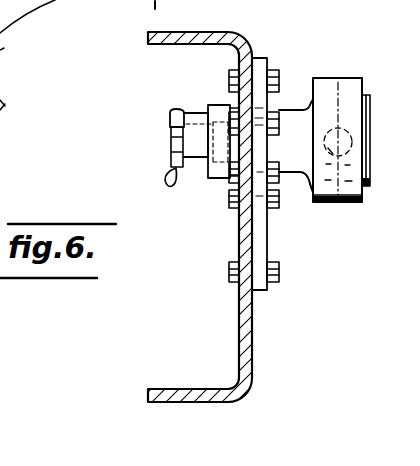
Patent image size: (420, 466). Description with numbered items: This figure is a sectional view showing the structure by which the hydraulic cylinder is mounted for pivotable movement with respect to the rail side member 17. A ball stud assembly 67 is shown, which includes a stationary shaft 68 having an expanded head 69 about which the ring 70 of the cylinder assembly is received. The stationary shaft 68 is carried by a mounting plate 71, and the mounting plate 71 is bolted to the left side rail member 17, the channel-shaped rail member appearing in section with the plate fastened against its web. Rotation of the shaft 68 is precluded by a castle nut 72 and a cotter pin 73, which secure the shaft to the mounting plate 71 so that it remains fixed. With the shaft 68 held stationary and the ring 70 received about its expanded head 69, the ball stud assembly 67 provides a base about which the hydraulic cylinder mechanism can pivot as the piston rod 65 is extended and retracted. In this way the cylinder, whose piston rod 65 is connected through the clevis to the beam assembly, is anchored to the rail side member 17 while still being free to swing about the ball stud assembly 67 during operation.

The left side rail member 17 is at (252, 342).
The piston rod 65 is at (330, 208).
The ball stud assembly 67 is at (308, 78).
The stationary shaft 68 is at (287, 117).
The expanded head 69 is at (370, 101).
The ring 70 is at (343, 77).
The mounting plate 71 is at (262, 246).
The castle nut 72 is at (201, 166).
The cotter pin 73 is at (176, 96).